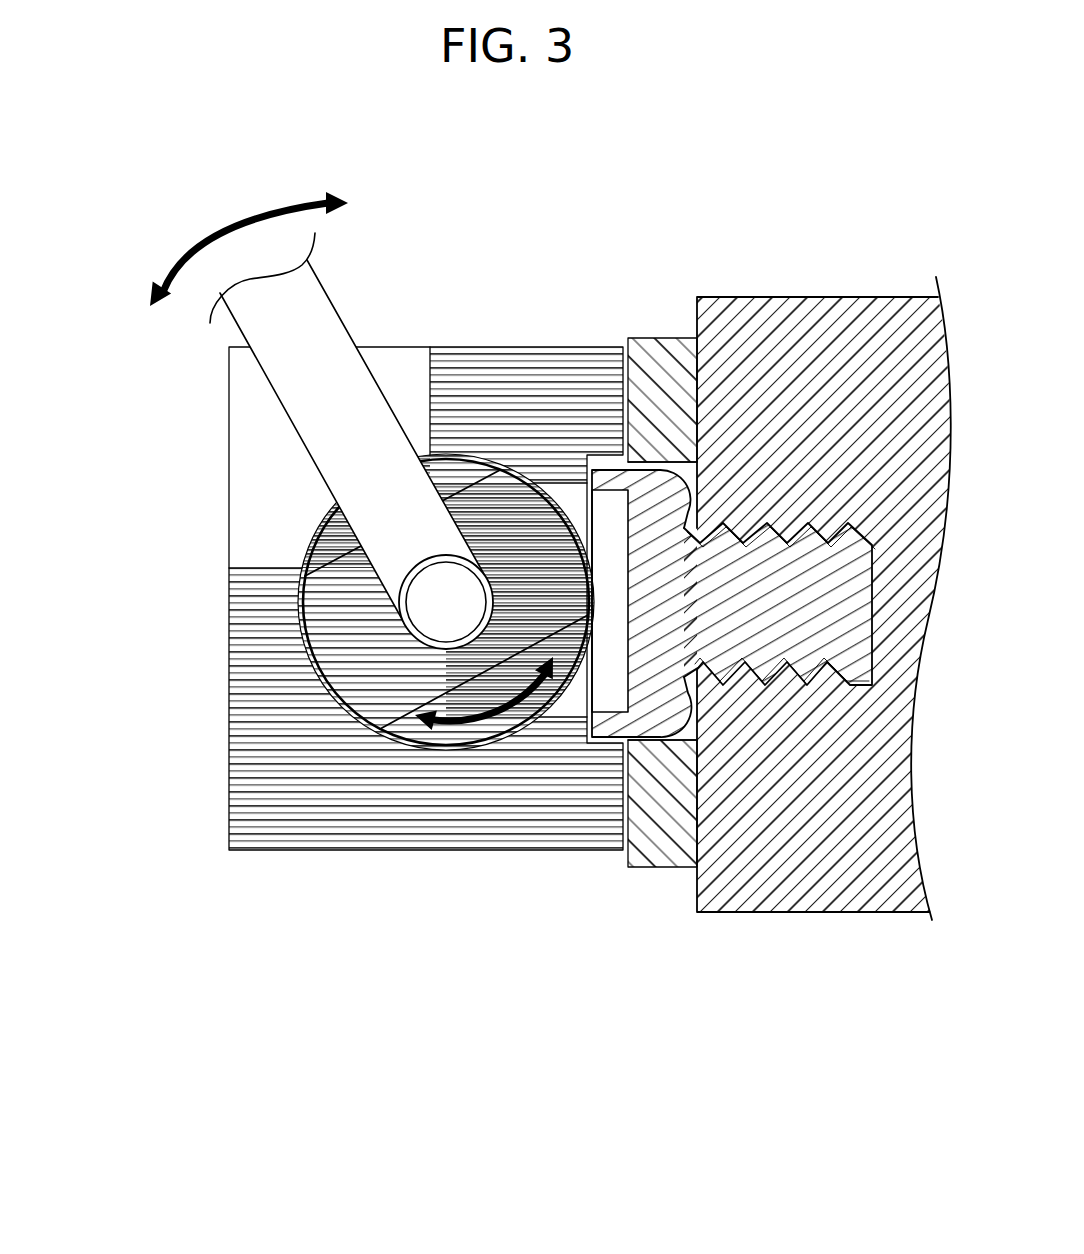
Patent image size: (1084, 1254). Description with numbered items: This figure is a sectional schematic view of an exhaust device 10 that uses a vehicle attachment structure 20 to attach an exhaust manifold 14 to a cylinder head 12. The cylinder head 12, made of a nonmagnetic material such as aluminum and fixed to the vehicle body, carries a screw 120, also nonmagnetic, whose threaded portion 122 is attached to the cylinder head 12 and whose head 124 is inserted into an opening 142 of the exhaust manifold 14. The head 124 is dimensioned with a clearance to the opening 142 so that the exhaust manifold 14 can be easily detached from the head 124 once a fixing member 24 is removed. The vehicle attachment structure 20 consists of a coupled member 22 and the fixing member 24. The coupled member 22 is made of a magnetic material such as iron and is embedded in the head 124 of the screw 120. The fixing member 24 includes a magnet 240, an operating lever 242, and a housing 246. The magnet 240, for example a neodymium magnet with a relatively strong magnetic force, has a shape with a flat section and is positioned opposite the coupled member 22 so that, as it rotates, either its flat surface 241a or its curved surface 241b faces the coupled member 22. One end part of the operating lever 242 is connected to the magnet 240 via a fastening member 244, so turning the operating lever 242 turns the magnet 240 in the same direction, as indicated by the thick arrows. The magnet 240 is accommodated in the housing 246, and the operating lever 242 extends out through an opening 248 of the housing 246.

The exhaust device 10 is at (112, 227).
The cylinder head 12 is at (822, 297).
The exhaust manifold 14 is at (647, 338).
The opening 142 is at (652, 437).
The vehicle attachment structure 20 is at (567, 216).
The coupled member 22 is at (613, 677).
The fixing member 24 is at (108, 323).
The screw 120 is at (780, 1057).
The threaded portion 122 is at (793, 677).
The head 124 is at (656, 700).
The magnet 240 is at (300, 606).
The flat surface 241a is at (443, 497).
The curved surface 241b is at (560, 516).
The operating lever 242 is at (326, 481).
The fastening member 244 is at (447, 607).
The housing 246 is at (230, 530).
The opening 248 is at (405, 419).